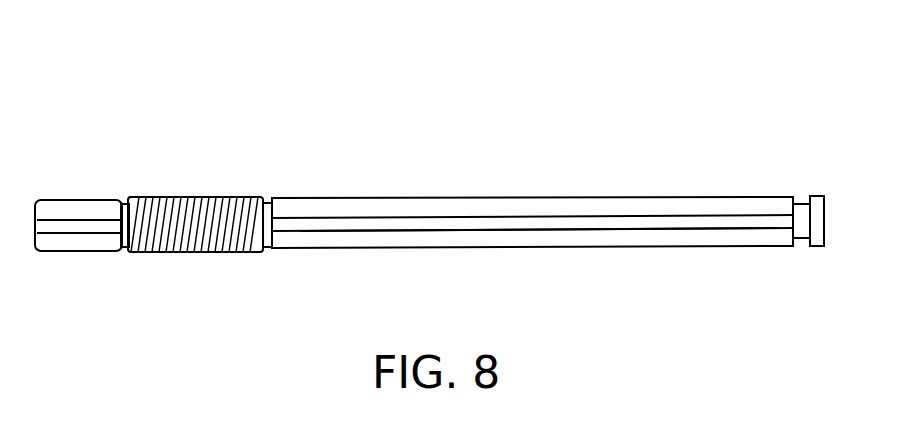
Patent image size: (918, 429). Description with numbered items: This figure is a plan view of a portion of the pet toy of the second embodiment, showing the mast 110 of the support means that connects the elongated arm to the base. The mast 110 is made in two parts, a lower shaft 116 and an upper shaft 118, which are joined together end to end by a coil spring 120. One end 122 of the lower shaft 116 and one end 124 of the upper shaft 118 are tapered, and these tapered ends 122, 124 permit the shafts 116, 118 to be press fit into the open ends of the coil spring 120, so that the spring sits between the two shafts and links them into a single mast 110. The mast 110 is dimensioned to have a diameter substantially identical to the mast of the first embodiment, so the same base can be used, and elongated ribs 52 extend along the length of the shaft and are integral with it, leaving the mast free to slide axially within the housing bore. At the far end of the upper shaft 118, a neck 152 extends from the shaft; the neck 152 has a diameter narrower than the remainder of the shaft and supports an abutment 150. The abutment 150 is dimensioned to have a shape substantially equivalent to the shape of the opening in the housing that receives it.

The mast 110 is at (626, 124).
The lower shaft 116 is at (88, 199).
The upper shaft 118 is at (402, 198).
The coil spring 120 is at (195, 197).
The tapered end of lower shaft 122 is at (127, 251).
The tapered end of upper shaft 124 is at (263, 252).
The elongated ribs 52 is at (532, 225).
The abutment 150 is at (824, 199).
The neck 152 is at (797, 238).